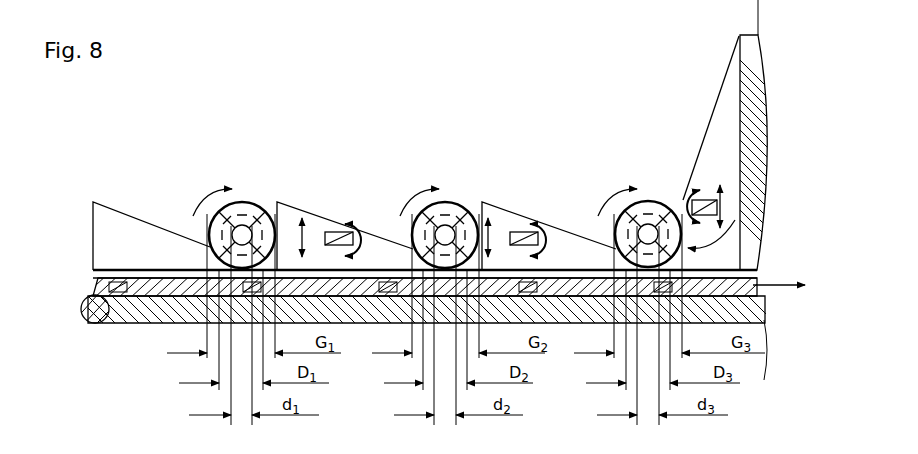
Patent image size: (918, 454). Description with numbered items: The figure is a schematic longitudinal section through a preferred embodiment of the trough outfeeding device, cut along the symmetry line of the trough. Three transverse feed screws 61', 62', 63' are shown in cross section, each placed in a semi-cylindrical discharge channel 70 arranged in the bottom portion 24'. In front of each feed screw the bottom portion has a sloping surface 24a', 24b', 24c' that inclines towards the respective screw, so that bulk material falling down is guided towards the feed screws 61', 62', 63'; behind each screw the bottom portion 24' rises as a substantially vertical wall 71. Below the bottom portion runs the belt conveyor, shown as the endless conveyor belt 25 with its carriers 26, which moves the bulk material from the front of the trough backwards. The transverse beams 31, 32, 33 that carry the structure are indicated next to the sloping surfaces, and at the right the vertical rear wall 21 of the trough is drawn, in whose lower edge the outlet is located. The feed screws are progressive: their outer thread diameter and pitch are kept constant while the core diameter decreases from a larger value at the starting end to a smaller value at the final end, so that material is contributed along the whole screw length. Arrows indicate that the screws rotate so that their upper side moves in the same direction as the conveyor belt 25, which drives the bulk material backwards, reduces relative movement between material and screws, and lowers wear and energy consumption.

The rear wall 21 is at (697, 160).
The bottom portion 24' is at (425, 180).
The inclined surface 24a' is at (151, 210).
The inclined surface 24b' is at (345, 210).
The inclined surface 24c' is at (549, 210).
The conveyor belt 25 is at (85, 302).
The carriers 26 is at (93, 292).
The transverse beam 31 is at (345, 230).
The transverse beam 32 is at (538, 215).
The transverse beam 33 is at (690, 196).
The feed screw 61' is at (234, 173).
The feed screw 62' is at (462, 184).
The feed screw 63' is at (635, 185).
The semi-cylindrical discharge channel 70 is at (740, 222).
The vertical wall 71 is at (263, 203).